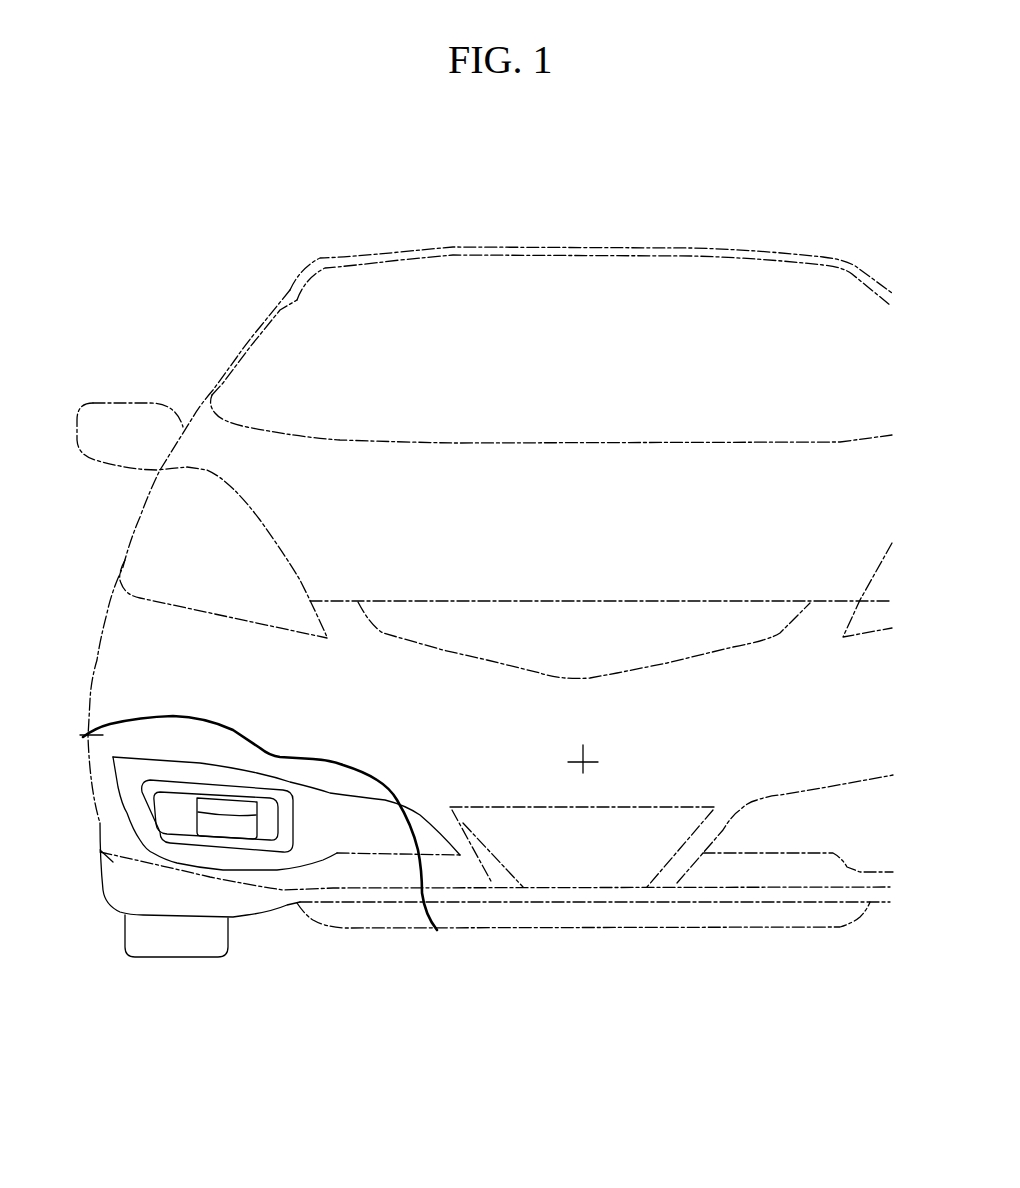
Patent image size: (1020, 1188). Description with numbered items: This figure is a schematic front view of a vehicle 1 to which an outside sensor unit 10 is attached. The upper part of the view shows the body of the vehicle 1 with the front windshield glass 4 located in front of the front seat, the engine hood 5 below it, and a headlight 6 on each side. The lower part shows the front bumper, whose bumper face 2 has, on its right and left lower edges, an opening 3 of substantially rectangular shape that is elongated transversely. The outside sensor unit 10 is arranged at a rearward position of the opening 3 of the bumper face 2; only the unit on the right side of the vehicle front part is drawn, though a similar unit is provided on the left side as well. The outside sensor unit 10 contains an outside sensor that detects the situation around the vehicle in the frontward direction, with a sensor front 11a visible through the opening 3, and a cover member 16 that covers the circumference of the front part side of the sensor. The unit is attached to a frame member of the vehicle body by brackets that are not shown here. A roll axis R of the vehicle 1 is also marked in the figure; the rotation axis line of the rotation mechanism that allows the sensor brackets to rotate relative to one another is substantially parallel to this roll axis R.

The vehicle 1 is at (705, 213).
The bumper face 2 is at (100, 753).
The opening 3 is at (150, 830).
The front windshield glass 4 is at (445, 298).
The engine hood 5 is at (360, 500).
The headlight 6 is at (160, 518).
The outside sensor unit 10 is at (242, 866).
The camera lens 11a is at (208, 836).
The cover member 16 is at (272, 845).
The roll axis R is at (587, 763).